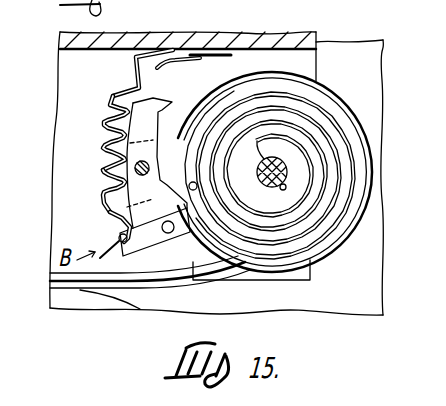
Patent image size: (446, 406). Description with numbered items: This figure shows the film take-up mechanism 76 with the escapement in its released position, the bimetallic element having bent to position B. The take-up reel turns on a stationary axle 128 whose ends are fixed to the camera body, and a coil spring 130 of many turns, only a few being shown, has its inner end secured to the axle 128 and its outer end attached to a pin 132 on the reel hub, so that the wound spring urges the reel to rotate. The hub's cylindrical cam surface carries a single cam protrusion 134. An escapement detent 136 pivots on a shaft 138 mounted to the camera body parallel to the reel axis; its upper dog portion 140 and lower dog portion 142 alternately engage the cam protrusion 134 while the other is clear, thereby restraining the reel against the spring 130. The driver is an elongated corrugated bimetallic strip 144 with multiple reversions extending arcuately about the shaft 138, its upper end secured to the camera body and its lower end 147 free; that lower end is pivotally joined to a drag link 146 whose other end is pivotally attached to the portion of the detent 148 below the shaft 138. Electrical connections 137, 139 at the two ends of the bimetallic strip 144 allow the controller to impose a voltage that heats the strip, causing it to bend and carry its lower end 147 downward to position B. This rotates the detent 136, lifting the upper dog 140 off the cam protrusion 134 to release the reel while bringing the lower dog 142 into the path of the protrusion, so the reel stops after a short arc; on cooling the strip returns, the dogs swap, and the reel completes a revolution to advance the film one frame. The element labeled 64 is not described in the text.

The film take-up mechanism 76 is at (340, 247).
The base 64 is at (66, 300).
The coil spring 130 is at (301, 100).
The stationary axle 128 is at (274, 187).
The pin 132 is at (195, 182).
The upper dog portion 140 is at (155, 98).
The portion of the detent below axis 148 is at (165, 236).
The drag link 146 is at (143, 243).
The shaft 138 is at (136, 170).
The bimetallic strip 144 is at (133, 66).
The escapement detent 136 is at (124, 112).
The cam protrusion 134 is at (108, 198).
The lower end of the bimetallic element 147 is at (116, 238).
The electrical connection 139 is at (175, 56).
The lower dog portion 142 is at (193, 266).
The electrical connection 137 is at (118, 252).